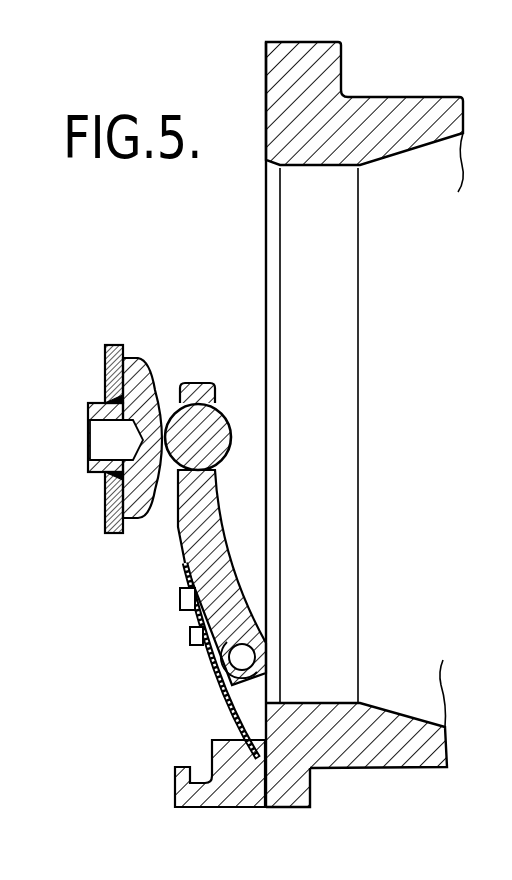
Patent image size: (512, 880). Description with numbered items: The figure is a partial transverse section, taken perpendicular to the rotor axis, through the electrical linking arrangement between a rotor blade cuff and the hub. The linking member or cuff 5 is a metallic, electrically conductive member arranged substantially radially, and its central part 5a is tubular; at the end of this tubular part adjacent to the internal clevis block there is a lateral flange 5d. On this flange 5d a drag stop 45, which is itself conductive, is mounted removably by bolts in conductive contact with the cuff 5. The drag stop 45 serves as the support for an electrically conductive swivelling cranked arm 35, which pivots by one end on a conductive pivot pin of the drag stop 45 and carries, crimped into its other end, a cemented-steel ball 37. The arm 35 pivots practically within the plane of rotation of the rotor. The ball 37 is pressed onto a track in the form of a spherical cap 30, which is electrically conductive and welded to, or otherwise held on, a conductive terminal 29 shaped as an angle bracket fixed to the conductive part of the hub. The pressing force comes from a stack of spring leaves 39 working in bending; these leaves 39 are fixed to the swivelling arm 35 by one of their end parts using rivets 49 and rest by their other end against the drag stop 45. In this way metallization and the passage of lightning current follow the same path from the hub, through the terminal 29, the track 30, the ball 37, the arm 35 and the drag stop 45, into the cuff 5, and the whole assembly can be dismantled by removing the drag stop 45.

The linking member (cuff) 5 is at (403, 97).
The central tubular part of the cuff 5a is at (397, 753).
The lateral flange 5d is at (283, 785).
The conductive terminal 29 is at (107, 348).
The spherical cap track 30 is at (132, 395).
The cemented-steel ball 37 is at (203, 440).
The swivelling cranked arm 35 is at (203, 528).
The spring leaves 39 is at (228, 719).
The rivets 49 is at (181, 598).
The drag stop 45 is at (197, 795).